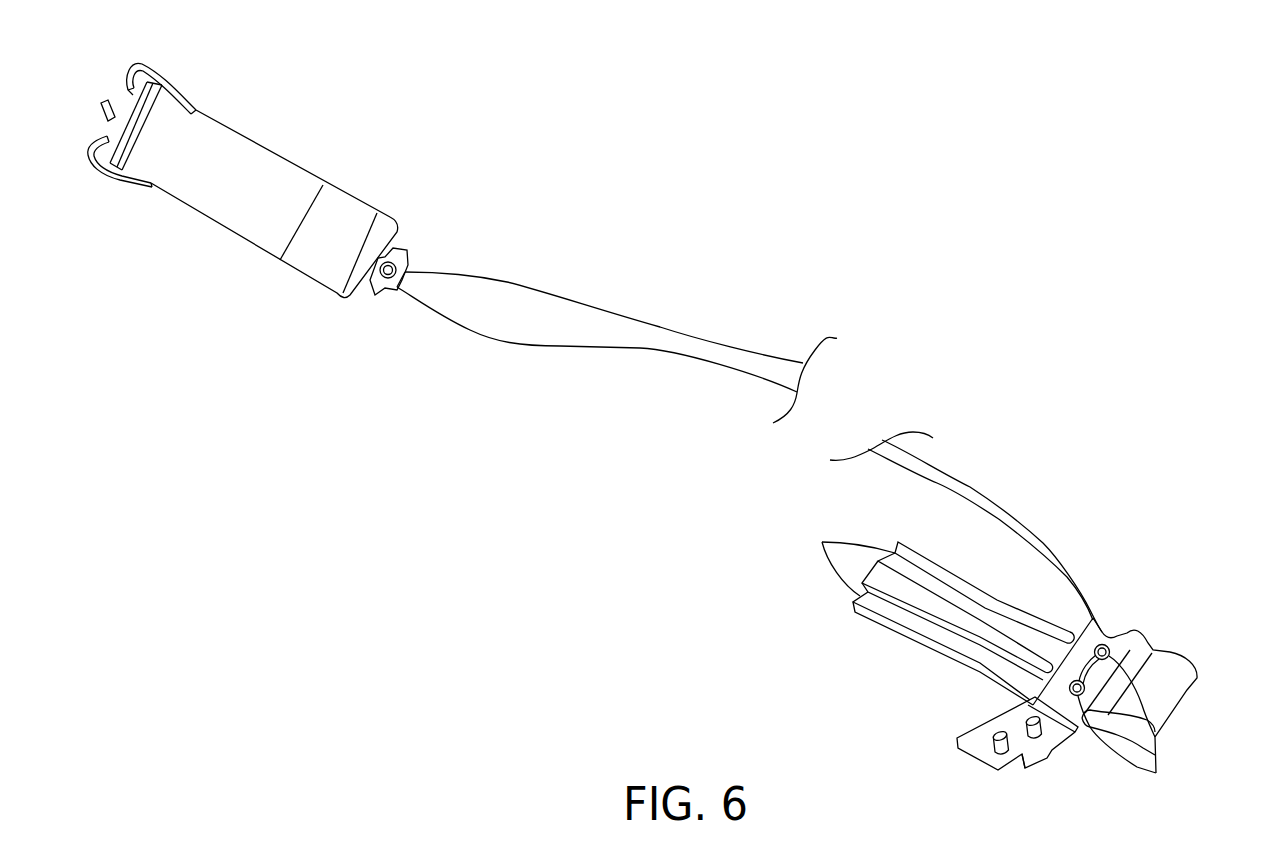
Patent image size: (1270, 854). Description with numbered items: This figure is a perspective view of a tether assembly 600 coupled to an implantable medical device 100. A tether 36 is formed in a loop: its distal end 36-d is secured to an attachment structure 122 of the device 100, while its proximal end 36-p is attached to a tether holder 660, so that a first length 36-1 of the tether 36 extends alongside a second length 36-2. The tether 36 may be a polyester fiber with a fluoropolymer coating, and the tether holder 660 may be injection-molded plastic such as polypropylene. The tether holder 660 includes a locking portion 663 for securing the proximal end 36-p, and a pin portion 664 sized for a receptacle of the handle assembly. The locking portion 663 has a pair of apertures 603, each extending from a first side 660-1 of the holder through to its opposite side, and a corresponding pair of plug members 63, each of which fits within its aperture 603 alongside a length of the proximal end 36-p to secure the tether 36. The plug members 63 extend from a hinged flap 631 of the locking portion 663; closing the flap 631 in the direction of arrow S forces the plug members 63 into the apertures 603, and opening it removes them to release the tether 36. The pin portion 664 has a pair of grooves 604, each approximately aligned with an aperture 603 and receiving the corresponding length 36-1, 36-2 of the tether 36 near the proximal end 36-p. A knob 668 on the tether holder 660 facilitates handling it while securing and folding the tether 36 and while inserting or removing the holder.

The implantable medical device 100 is at (269, 105).
The attachment structure 122 is at (410, 262).
The tether 36 is at (688, 303).
The first length of tether 36-1 is at (518, 282).
The second length of tether 36-2 is at (578, 347).
The distal end of tether 36-d is at (392, 305).
The proximal end of tether 36-p is at (1118, 622).
The tether assembly 600 is at (918, 260).
The groove 604 is at (822, 542).
The tether holder 660 is at (877, 703).
The first side of tether holder 660-1 is at (993, 603).
The pin portion 664 is at (863, 632).
The locking portion 663 is at (1077, 758).
The plug member 63 is at (1023, 738).
The hinged flap 631 is at (1024, 757).
The aperture 603 is at (1125, 725).
The knob 668 is at (1175, 686).
The arrow S is at (990, 683).